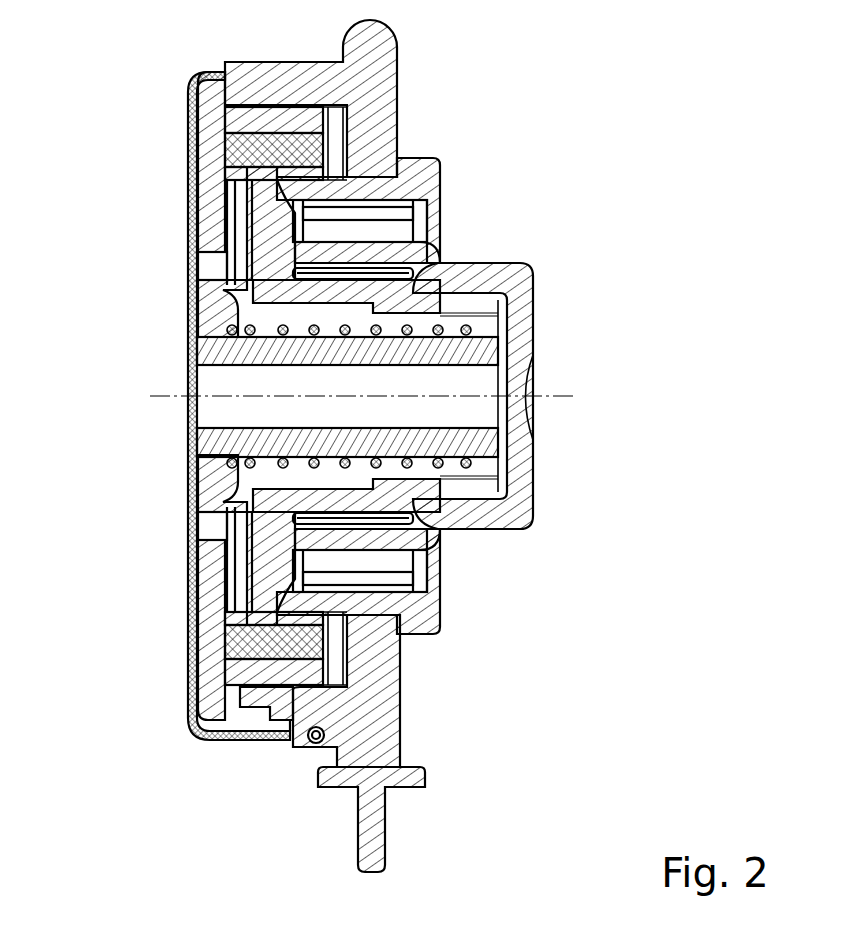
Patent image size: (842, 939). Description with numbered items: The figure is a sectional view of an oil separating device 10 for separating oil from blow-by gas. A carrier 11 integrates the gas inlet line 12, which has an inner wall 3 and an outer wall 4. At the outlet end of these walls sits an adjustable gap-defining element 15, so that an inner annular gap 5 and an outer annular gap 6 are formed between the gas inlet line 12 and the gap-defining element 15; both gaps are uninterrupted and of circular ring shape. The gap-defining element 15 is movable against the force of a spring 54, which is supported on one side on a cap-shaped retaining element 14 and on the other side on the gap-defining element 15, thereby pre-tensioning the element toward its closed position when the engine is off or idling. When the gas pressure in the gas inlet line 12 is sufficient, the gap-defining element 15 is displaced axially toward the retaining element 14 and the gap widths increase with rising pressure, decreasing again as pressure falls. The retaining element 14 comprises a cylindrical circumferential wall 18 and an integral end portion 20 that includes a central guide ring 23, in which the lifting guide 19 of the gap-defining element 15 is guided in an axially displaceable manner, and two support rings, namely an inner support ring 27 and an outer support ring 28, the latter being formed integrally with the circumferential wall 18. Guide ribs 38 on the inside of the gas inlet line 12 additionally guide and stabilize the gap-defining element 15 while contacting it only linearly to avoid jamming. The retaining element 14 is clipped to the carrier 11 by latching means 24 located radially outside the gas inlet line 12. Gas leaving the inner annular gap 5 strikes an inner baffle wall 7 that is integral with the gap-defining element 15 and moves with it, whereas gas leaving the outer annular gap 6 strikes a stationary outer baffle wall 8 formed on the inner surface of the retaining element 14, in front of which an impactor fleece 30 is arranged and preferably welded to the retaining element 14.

The inner wall 3 is at (400, 238).
The outer wall 4 is at (437, 577).
The inner annular gap 5 is at (197, 513).
The outer annular gap 6 is at (243, 707).
The inner baffle wall 7 is at (247, 262).
The outer baffle wall 8 is at (197, 640).
The oil separating device 10 is at (555, 715).
The carrier 11 is at (400, 727).
The gas inlet line 12 is at (437, 172).
The retaining element 14 is at (185, 318).
The gap-defining element 15 is at (197, 193).
The circumferential wall 18 is at (270, 120).
The lifting guide 19 is at (193, 353).
The end portion 20 is at (225, 50).
The guide ring 23 is at (193, 460).
The latching means 24 is at (312, 742).
The inner support ring 27 is at (197, 567).
The outer support ring 28 is at (197, 675).
The impactor fleece 30 is at (197, 132).
The guide ribs 38 is at (438, 253).
The spring 54 is at (466, 467).